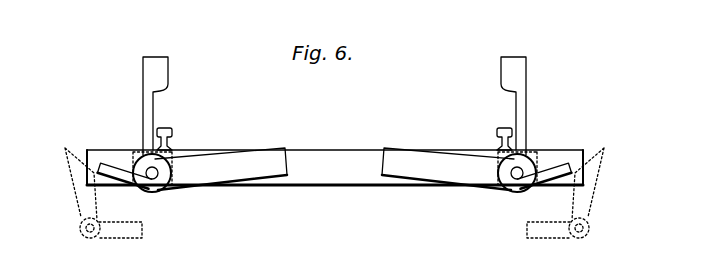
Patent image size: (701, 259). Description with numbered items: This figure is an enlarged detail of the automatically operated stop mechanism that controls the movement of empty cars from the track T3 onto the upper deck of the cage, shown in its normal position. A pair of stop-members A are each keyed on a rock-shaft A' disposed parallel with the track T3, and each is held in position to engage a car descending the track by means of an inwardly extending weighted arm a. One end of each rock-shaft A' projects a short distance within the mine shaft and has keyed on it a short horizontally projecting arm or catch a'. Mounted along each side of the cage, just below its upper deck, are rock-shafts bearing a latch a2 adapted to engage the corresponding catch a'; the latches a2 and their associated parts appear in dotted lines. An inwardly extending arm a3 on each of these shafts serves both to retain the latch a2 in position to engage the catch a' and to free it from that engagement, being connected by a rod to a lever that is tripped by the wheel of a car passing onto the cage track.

The stop-member A is at (351, 104).
The rock-shaft A' is at (334, 189).
The track T3 is at (167, 130).
The weighted arm a is at (334, 146).
The arm or catch a' is at (346, 142).
The latch a2 is at (620, 193).
The inwardly extending arm a3 is at (130, 230).